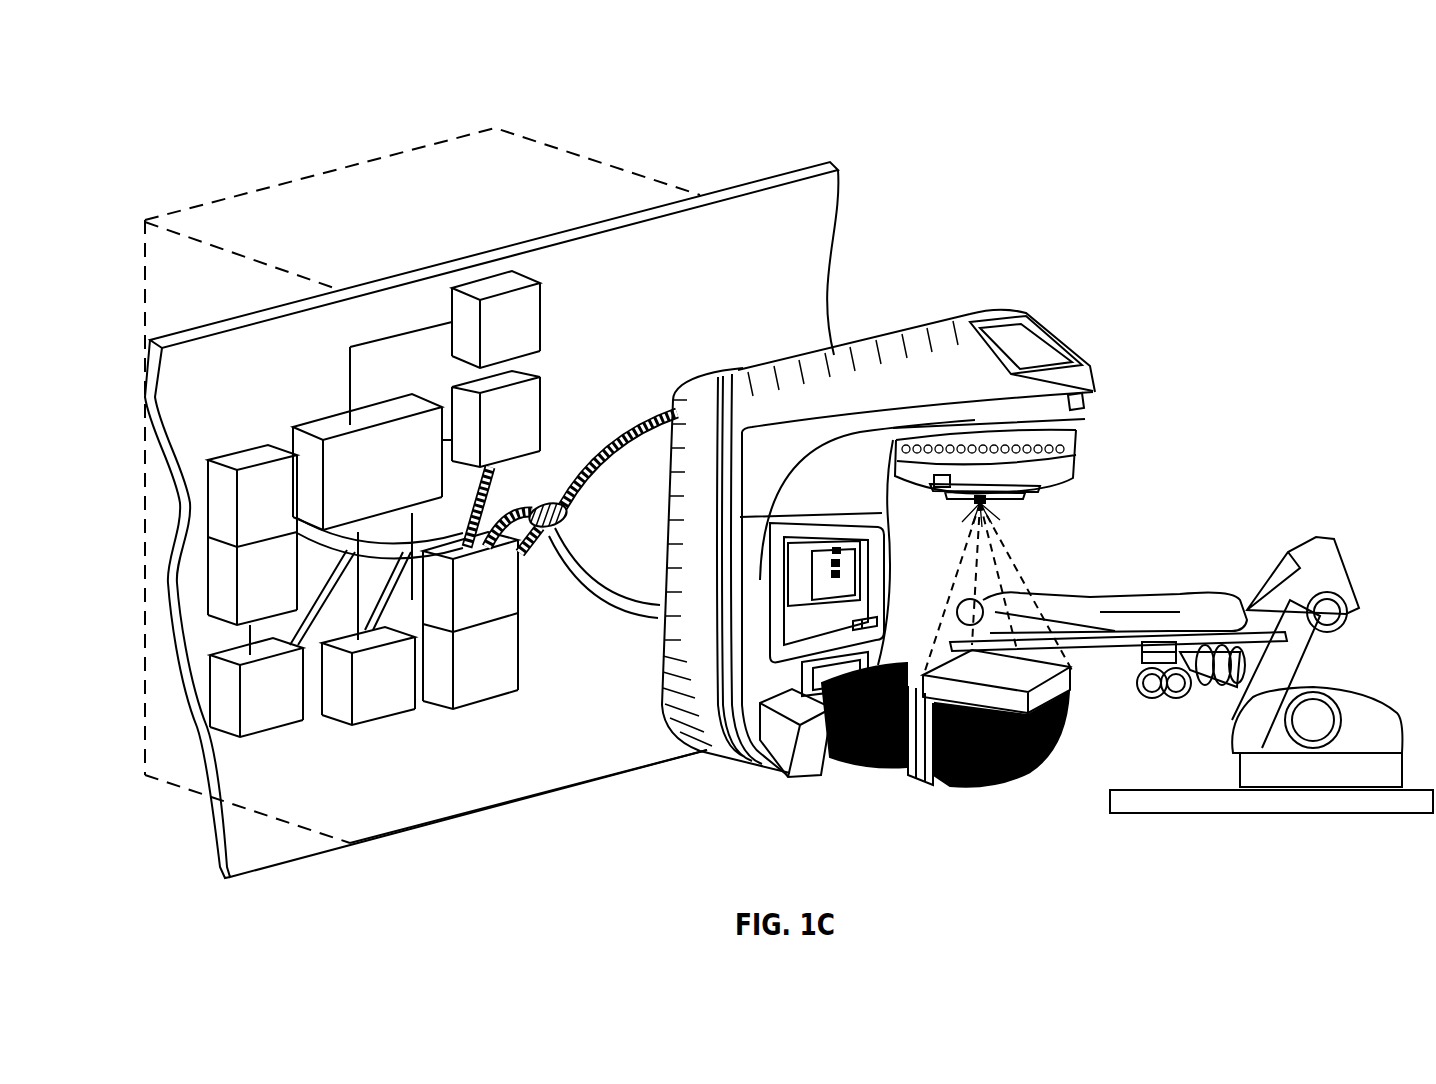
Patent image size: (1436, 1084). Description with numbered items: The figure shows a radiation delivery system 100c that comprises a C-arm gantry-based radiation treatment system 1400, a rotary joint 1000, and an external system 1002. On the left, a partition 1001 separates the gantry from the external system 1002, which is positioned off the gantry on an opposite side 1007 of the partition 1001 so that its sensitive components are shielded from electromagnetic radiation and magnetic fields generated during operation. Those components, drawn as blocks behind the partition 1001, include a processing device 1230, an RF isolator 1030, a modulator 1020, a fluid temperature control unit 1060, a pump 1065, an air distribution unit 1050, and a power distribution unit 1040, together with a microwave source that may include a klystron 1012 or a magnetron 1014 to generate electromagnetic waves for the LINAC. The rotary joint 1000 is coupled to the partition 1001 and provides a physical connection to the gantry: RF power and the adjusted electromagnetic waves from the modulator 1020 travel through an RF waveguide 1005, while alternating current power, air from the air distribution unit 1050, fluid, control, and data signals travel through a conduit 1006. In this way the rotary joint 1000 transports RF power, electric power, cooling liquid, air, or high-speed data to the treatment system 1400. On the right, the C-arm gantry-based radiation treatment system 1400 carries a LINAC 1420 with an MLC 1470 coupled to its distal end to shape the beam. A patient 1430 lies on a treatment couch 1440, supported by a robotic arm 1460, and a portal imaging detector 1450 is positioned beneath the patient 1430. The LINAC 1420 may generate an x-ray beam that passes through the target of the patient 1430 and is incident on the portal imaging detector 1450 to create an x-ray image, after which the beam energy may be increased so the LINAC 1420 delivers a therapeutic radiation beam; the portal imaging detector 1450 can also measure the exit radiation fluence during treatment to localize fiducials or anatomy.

The radiation delivery system 100c is at (205, 102).
The external system 1002 is at (268, 187).
The partition 1001 is at (834, 345).
The opposite side 1007 is at (458, 806).
The processing device 1230 is at (413, 445).
The RF isolator 1030 is at (523, 305).
The modulator 1020 is at (513, 403).
The fluid temperature control unit 1060 is at (262, 498).
The pump 1065 is at (232, 592).
The air distribution unit 1050 is at (258, 718).
The power distribution unit 1040 is at (372, 700).
The klystron 1012 is at (498, 606).
The magnetron 1014 is at (484, 684).
The RF waveguide 1005 is at (621, 436).
The rotary joint 1000 is at (570, 525).
The conduit 1006 is at (634, 608).
The C-arm gantry-based radiation treatment system 1400 is at (1240, 328).
The LINAC 1420 is at (1080, 462).
The MLC 1470 is at (997, 502).
The patient 1430 is at (966, 598).
The treatment couch 1440 is at (946, 642).
The portal imaging detector 1450 is at (1062, 699).
The robotic arm 1460 is at (1326, 560).